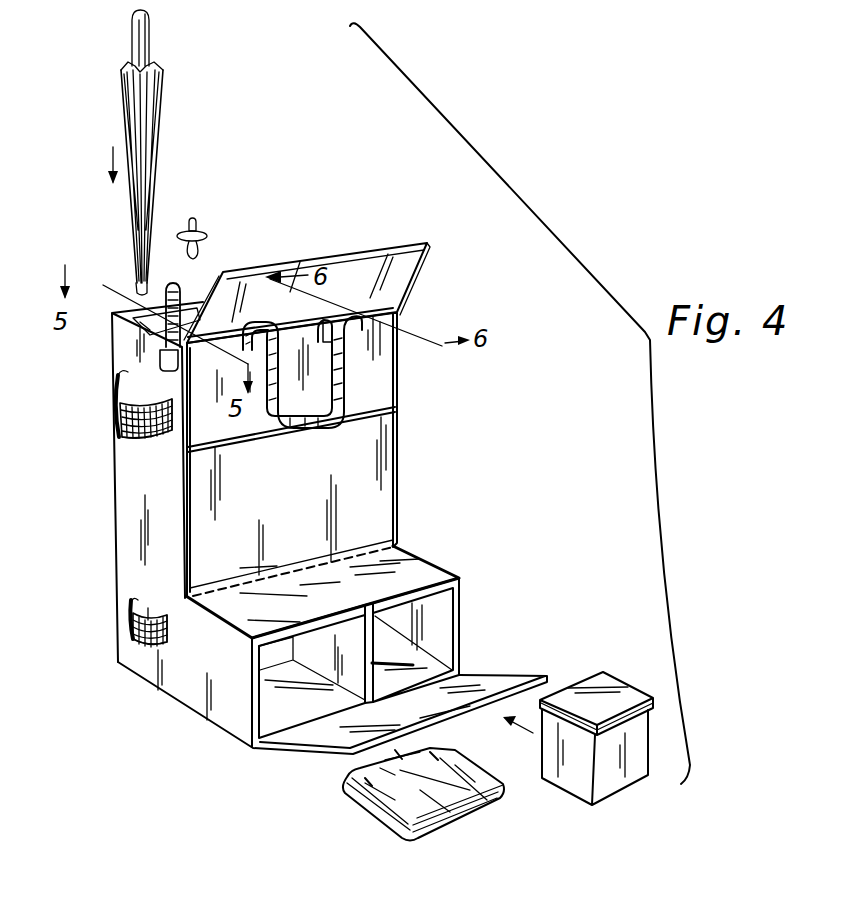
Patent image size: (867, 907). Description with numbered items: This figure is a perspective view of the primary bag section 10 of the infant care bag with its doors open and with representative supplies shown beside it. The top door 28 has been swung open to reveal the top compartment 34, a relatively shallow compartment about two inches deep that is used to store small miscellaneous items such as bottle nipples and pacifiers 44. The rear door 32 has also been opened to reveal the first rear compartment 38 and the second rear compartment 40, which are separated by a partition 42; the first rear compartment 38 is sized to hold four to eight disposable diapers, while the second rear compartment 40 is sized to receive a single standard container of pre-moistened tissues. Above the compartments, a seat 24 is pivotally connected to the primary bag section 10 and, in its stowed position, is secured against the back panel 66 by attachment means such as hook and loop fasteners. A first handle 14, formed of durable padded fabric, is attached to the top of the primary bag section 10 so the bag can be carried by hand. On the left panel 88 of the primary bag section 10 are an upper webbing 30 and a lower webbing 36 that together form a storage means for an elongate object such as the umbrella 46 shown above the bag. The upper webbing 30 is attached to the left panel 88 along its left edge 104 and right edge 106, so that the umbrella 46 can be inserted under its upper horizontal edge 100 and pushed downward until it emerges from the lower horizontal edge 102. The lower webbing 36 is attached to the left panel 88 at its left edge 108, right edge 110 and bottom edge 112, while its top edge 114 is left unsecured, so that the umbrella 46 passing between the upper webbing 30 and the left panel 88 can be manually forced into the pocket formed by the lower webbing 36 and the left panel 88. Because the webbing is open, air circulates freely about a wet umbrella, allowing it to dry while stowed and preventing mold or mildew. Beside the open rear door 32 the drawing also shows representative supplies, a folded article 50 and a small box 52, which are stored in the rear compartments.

The primary bag section 10 is at (292, 517).
The first handle 14 is at (262, 420).
The seat 24 is at (375, 495).
The top door 28 is at (407, 263).
The upper webbing 30 is at (106, 420).
The rear door 32 is at (323, 740).
The top compartment 34 is at (208, 283).
The lower webbing 36 is at (141, 621).
The first rear compartment 38 is at (273, 707).
The second rear compartment 40 is at (430, 627).
The partition 42 is at (364, 640).
The pacifiers 44 is at (205, 229).
The umbrella 46 is at (155, 97).
The folded blanket 50 is at (387, 817).
The storage box 52 is at (625, 780).
The back panel 66 is at (393, 372).
The left panel 88 is at (152, 475).
The upper horizontal edge 100 is at (152, 398).
The lower horizontal edge 102 is at (128, 437).
The left edge 104 is at (130, 375).
The right edge 106 is at (176, 437).
The left edge 108 is at (128, 597).
The right edge 110 is at (168, 630).
The bottom edge 112 is at (148, 647).
The top edge 114 is at (148, 608).